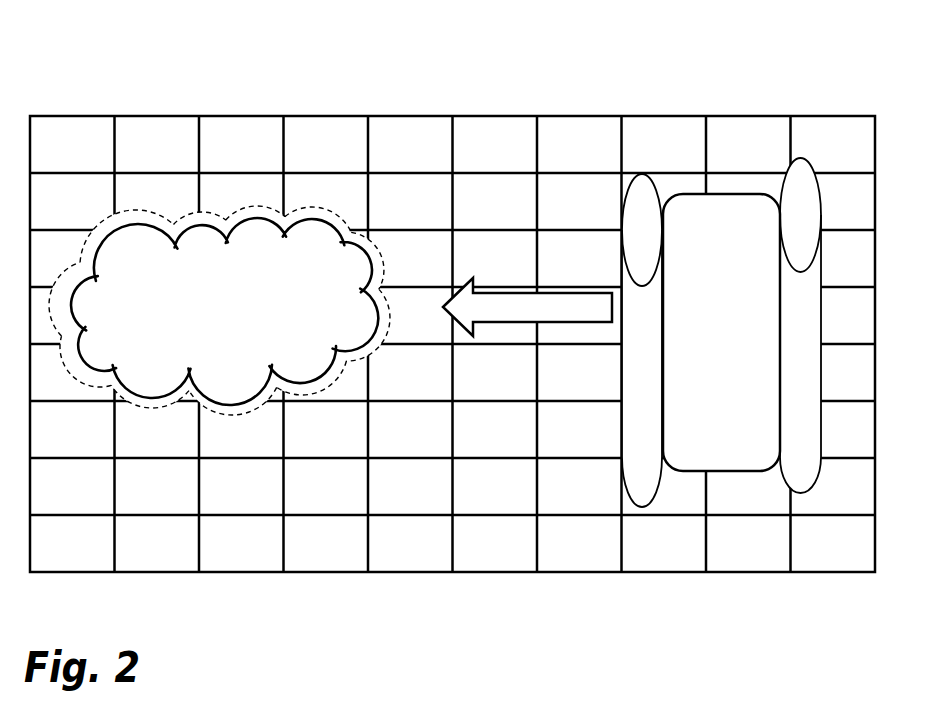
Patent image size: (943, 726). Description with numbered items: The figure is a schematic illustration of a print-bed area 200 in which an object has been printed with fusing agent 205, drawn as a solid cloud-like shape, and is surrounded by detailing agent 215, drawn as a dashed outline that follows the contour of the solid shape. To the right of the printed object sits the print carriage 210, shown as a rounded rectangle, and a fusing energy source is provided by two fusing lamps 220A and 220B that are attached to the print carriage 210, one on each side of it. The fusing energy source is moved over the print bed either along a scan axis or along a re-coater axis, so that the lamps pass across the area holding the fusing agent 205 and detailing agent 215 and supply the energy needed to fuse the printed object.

The print-bed area 200 is at (196, 54).
The object printed with fusing agent 205 is at (193, 232).
The print carriage 210 is at (722, 193).
The detailing agent 215 is at (368, 348).
The fusing lamp 220A is at (632, 178).
The fusing lamp 220B is at (797, 160).